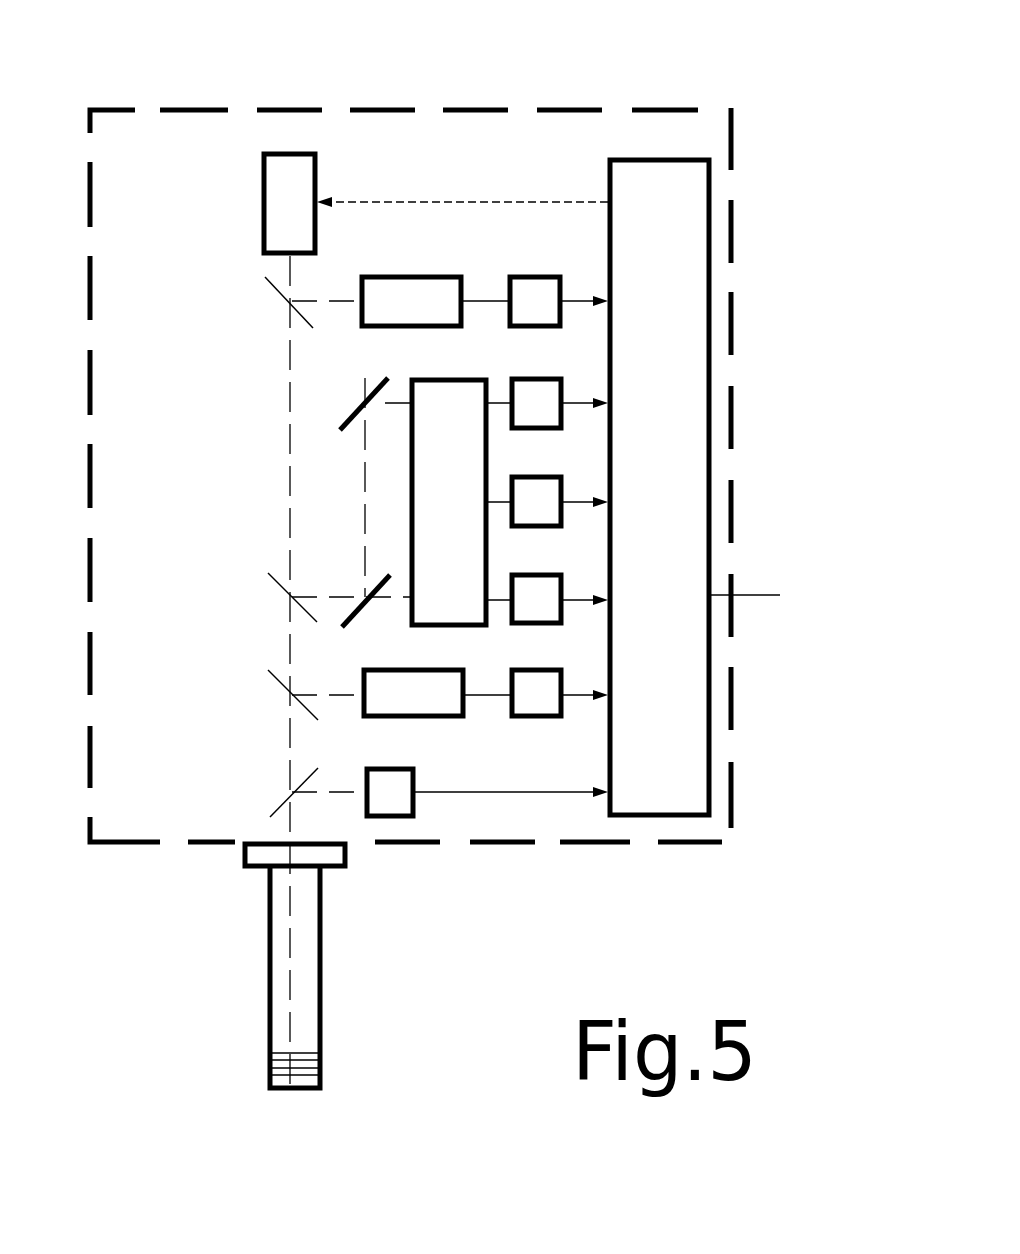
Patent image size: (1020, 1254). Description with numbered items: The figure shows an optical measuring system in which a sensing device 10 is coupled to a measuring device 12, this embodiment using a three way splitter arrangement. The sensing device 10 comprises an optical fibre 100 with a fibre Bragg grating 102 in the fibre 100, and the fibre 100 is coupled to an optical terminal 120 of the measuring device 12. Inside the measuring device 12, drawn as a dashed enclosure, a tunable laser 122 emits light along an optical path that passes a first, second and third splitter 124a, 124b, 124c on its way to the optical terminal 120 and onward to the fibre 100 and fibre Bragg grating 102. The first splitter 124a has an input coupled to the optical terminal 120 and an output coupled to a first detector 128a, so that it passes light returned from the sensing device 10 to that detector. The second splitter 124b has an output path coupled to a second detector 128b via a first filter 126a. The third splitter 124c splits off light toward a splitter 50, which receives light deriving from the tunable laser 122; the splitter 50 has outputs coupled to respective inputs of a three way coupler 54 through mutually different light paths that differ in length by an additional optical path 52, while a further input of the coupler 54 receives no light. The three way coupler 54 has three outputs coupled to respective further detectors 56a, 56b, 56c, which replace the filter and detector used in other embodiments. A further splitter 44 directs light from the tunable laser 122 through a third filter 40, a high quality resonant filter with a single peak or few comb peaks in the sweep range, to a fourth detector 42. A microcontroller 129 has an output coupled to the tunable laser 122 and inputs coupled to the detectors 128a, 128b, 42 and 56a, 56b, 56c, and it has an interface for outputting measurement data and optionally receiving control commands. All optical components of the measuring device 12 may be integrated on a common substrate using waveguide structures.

The sensing device 10 is at (200, 1043).
The measuring device 12 is at (213, 108).
The third filter 40 is at (412, 275).
The fourth detector 42 is at (530, 275).
The splitter 44 is at (265, 277).
The splitter 50 is at (380, 577).
The additional optical path 52 is at (365, 450).
The three way coupler 54 is at (460, 627).
The further detector 56a is at (535, 377).
The further detector 56b is at (528, 475).
The further detector 56c is at (528, 573).
The optical fibre 100 is at (268, 970).
The fibre Bragg grating 102 is at (322, 1058).
The optical terminal 120 is at (243, 868).
The tunable laser 122 is at (296, 152).
The first splitter 124a is at (270, 817).
The second splitter 124b is at (268, 670).
The third splitter 124c is at (268, 573).
The first filter 126a is at (420, 718).
The first detector 128a is at (390, 818).
The second detector 128b is at (537, 718).
The microcontroller 129 is at (633, 158).